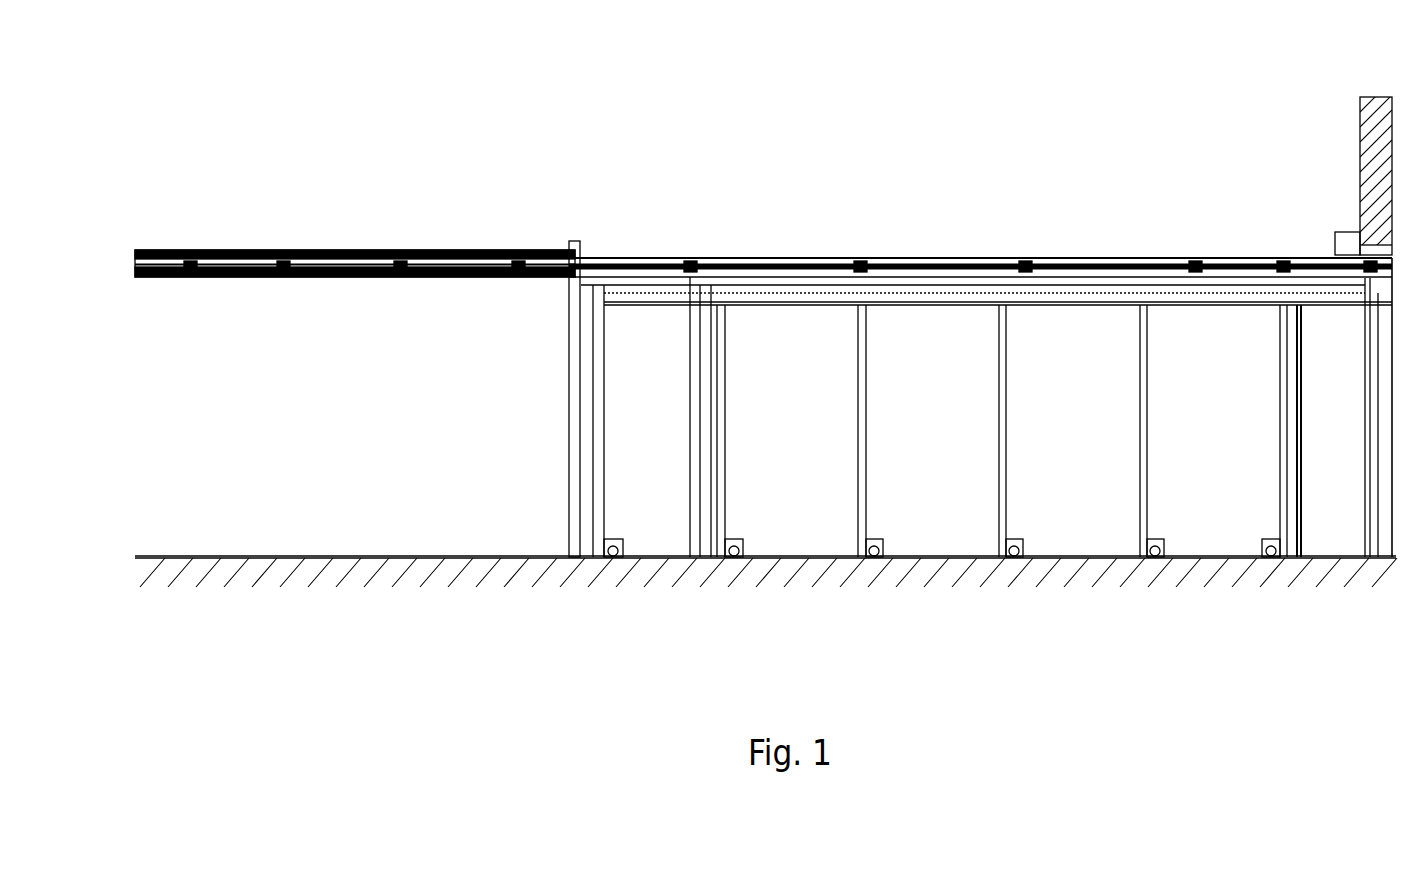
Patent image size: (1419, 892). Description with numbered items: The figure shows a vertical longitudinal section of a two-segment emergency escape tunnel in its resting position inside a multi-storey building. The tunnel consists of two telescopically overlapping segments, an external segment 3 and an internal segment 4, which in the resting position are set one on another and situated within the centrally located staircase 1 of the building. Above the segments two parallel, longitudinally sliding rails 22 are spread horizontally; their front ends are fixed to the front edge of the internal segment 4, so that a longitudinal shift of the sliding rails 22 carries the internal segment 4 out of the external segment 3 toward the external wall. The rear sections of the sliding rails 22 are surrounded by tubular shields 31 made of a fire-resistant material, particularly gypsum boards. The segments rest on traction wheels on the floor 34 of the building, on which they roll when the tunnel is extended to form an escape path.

The staircase 1 is at (407, 418).
The external segment 3 is at (569, 483).
The internal segment 4 is at (593, 483).
The sliding rails 22 is at (893, 258).
The tubular shields 31 is at (332, 250).
The floor 34 is at (335, 557).